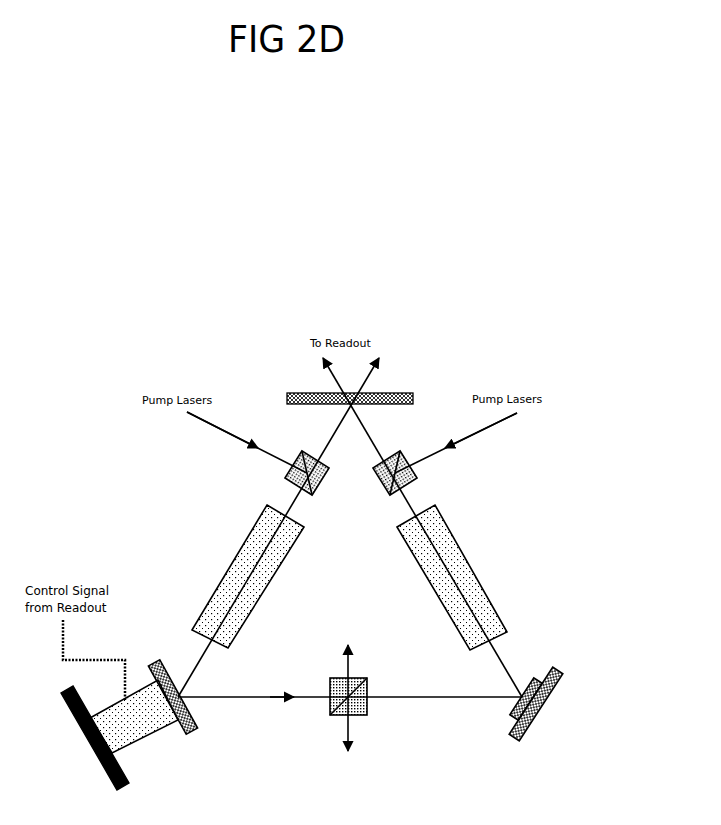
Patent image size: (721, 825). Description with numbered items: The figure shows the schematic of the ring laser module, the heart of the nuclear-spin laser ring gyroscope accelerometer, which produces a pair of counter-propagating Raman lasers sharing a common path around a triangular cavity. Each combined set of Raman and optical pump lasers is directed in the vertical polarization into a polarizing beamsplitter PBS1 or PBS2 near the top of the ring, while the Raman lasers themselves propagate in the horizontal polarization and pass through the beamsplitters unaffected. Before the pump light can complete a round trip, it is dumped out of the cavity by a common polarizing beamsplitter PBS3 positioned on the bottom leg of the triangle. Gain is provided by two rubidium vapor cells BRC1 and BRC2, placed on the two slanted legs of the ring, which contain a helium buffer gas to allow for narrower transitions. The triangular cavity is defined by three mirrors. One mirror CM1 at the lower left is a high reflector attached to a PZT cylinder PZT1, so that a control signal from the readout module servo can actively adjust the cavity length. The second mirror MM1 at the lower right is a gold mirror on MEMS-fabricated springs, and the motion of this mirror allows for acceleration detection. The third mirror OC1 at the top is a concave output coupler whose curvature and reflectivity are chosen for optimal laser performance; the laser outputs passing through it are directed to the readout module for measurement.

The output coupler OC1 is at (354, 409).
The polarizing beamsplitter PBS1 is at (283, 473).
The polarizing beamsplitter PBS2 is at (417, 473).
The common polarizing beamsplitter PBS3 is at (359, 687).
The rubidium vapor cell BRC1 is at (243, 576).
The rubidium vapor cell BRC2 is at (454, 577).
The cavity mirror CM1 is at (180, 706).
The MEMS mirror MM1 is at (512, 704).
The PZT cylinder PZT1 is at (119, 735).